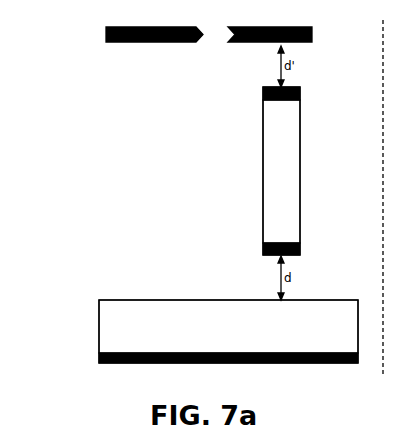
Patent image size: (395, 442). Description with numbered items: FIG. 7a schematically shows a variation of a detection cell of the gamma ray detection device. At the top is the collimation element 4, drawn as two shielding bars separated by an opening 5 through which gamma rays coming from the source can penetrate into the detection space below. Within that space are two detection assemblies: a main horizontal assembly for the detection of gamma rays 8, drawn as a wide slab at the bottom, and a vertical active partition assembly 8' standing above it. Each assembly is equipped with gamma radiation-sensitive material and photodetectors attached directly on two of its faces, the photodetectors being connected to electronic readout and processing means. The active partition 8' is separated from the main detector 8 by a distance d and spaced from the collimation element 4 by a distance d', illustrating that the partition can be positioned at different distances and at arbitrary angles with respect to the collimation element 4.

The collimation element 4 is at (112, 44).
The opening 5 is at (214, 39).
The assembly for the detection of gamma rays 8 is at (228, 311).
The assembly for the detection (active partition) of gamma rays 8' is at (251, 171).